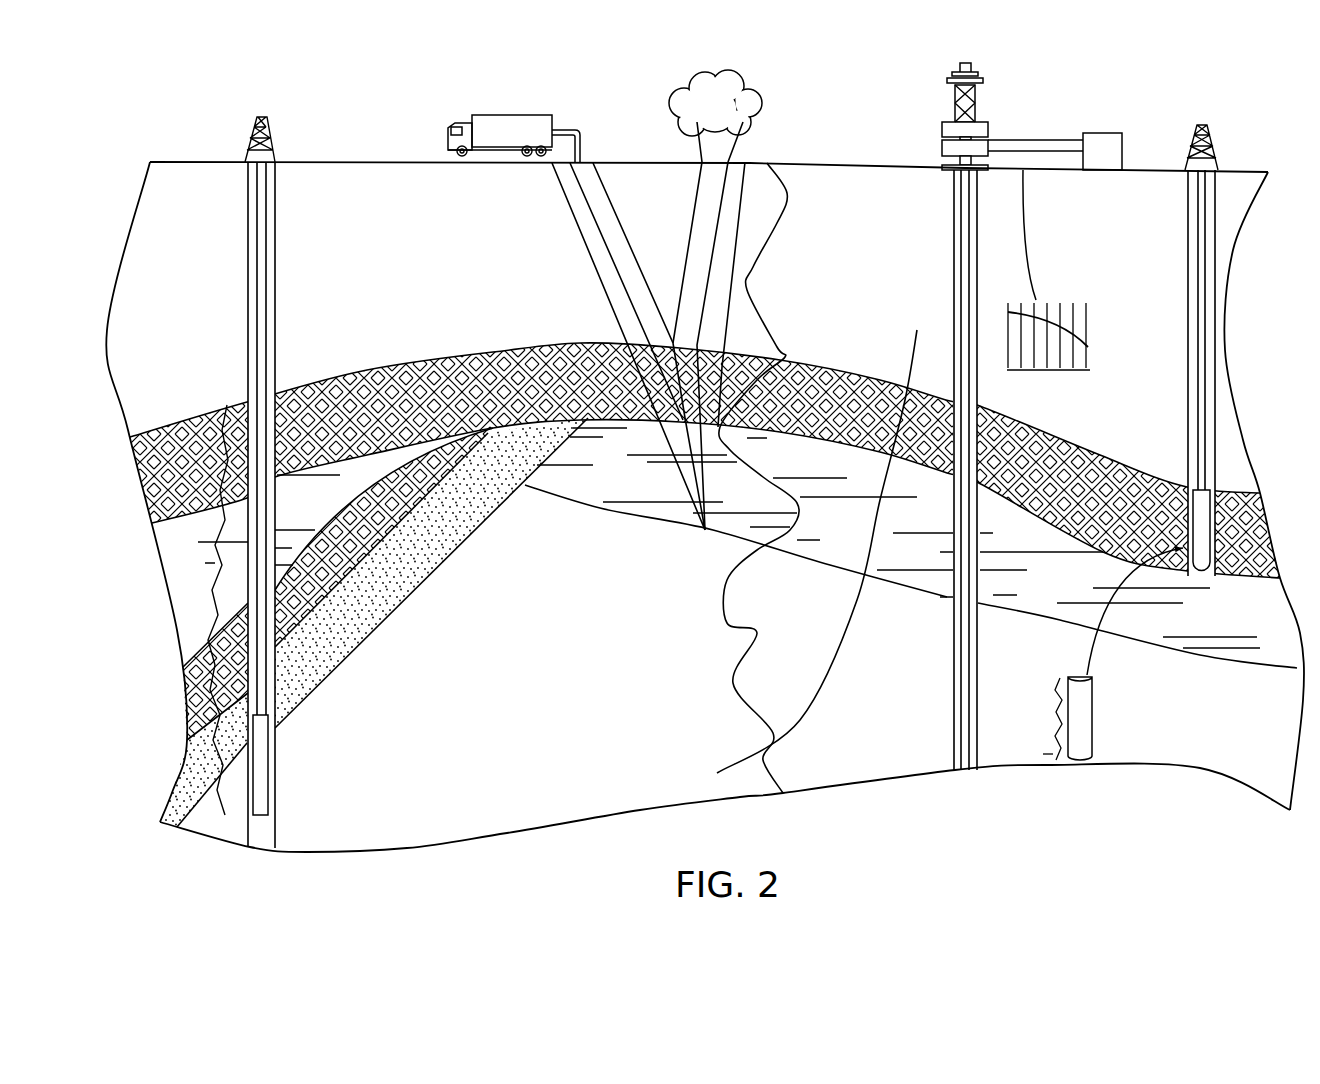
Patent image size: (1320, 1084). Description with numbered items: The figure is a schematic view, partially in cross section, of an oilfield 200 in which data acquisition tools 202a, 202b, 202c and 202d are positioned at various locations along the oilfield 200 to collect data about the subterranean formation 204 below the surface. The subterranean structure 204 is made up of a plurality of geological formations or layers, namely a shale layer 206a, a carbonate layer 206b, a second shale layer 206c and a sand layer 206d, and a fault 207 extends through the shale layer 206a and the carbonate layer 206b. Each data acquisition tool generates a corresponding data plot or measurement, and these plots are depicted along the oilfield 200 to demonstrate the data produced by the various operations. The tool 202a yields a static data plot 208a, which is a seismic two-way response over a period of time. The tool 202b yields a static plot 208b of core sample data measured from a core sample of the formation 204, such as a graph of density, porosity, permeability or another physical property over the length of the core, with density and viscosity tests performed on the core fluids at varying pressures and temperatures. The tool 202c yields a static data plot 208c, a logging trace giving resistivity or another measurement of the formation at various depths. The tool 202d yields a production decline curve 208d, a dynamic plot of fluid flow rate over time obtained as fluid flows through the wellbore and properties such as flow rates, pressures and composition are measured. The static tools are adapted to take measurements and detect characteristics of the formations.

The oilfield 200 is at (1152, 135).
The data acquisition tool 202a is at (477, 114).
The data acquisition tool 202b is at (1210, 568).
The data acquisition tool 202c is at (270, 772).
The data acquisition tool 202d is at (952, 500).
The subterranean formation 204 is at (579, 611).
The shale layer 206a is at (510, 403).
The carbonate layer 206b is at (331, 510).
The shale layer 206c is at (395, 531).
The sand layer 206d is at (457, 546).
The fault 207 is at (913, 346).
The static data plot 208a is at (752, 648).
The static plot 208b is at (1056, 694).
The static data plot 208c is at (207, 560).
The production decline curve 208d is at (1047, 372).